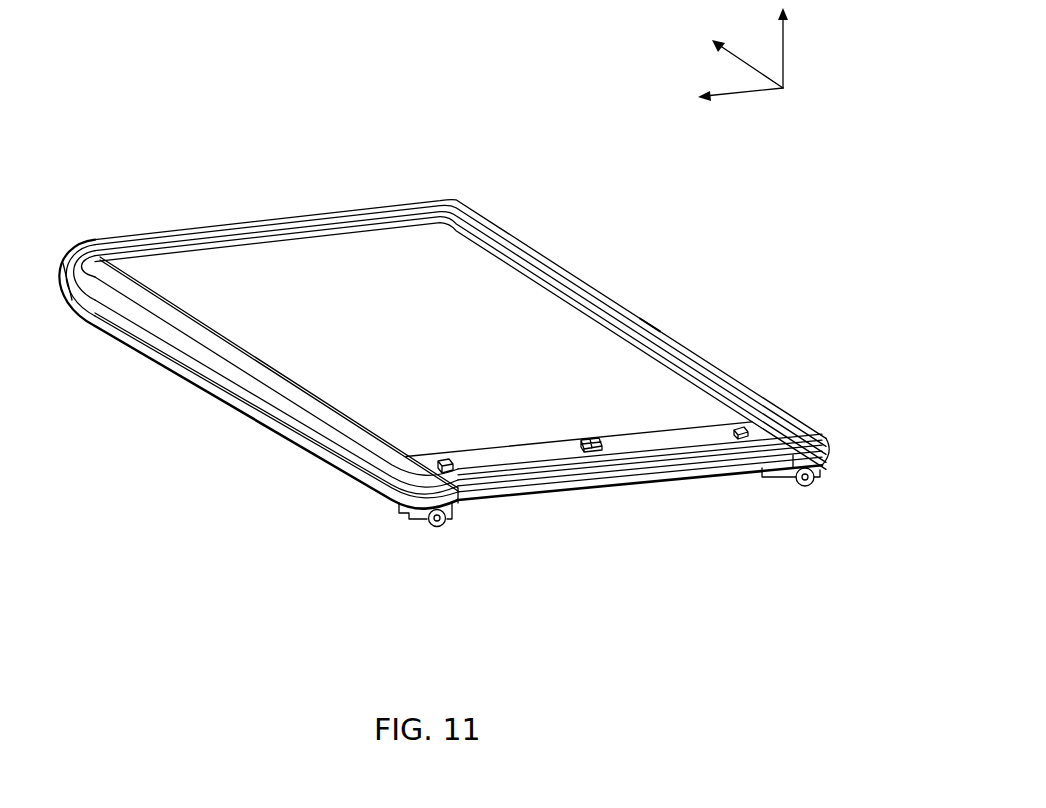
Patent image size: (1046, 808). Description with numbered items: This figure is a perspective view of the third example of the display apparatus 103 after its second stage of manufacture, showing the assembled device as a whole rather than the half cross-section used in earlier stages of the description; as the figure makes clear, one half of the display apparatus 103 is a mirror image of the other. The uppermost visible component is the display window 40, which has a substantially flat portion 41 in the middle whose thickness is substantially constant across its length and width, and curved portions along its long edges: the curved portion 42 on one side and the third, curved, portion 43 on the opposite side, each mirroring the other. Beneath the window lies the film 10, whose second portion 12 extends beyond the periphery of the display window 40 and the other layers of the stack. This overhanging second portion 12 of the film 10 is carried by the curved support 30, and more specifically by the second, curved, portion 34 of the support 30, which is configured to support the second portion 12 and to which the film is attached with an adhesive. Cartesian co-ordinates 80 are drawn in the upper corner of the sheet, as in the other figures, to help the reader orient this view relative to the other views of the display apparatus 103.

The film 10 is at (148, 381).
The second portion of the film 12 is at (240, 410).
The curved support 30 is at (413, 550).
The second, curved, portion of the support 34 is at (347, 480).
The display window 40 is at (525, 313).
The substantially flat portion of the display window 41 is at (427, 283).
The curved portion of the display window 42 is at (125, 305).
The third, curved, portion of the display window 43 is at (657, 336).
The Cartesian co-ordinates 80 is at (745, 134).
The third example of the display apparatus 103 is at (778, 520).